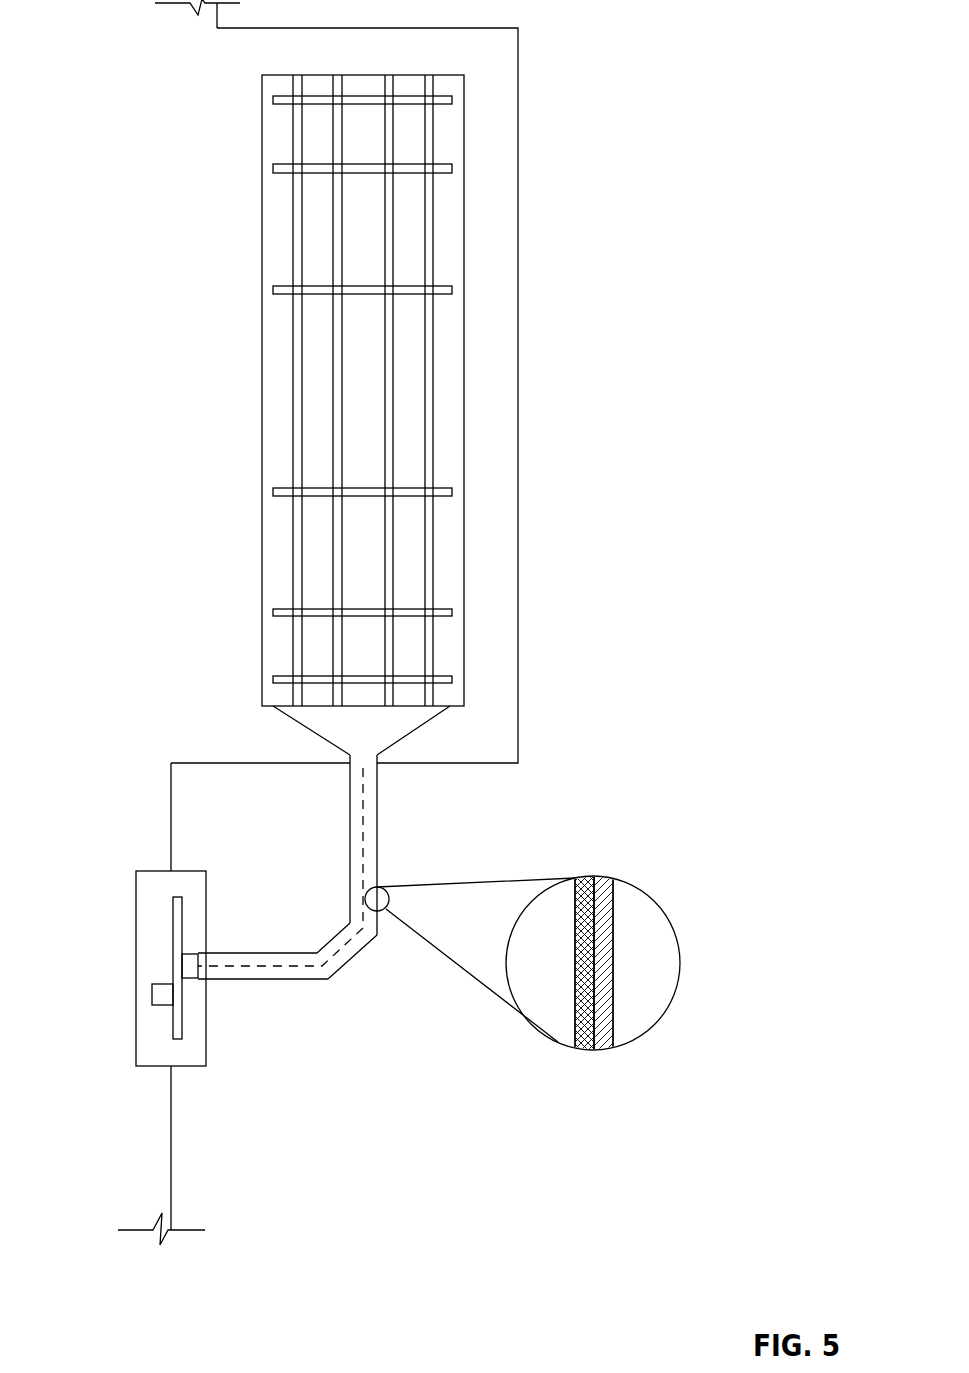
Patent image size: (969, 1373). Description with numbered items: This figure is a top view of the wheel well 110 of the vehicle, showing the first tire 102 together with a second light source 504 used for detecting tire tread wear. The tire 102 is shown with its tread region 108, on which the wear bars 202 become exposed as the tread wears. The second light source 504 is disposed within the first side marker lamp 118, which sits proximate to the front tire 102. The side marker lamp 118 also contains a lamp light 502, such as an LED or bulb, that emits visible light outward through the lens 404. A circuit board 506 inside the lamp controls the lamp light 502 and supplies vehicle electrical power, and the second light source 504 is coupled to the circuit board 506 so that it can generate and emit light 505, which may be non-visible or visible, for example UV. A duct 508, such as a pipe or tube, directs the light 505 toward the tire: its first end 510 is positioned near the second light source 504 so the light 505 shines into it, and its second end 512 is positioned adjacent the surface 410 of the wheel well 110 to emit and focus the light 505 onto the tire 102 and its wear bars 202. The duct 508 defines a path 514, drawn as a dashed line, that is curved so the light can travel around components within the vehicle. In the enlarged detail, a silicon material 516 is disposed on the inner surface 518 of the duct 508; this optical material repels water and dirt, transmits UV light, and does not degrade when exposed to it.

The first tire 102 is at (192, 97).
The heat exchanger core 108 is at (273, 252).
The wheel well 110 is at (497, 50).
The first side marker lamp 118 is at (113, 885).
The wear bar 202 is at (452, 104).
The lens 404 is at (140, 1066).
The surface of the wheel well 410 is at (282, 761).
The lamp light 502 is at (158, 983).
The second light source 504 is at (187, 955).
The light 505 is at (318, 735).
The circuit board 506 is at (180, 1040).
The duct 508 is at (392, 858).
The first end 510 is at (213, 980).
The second end 512 is at (378, 768).
The path 514 is at (337, 957).
The silicon material 516 is at (575, 1030).
The inner surface 518 is at (355, 765).